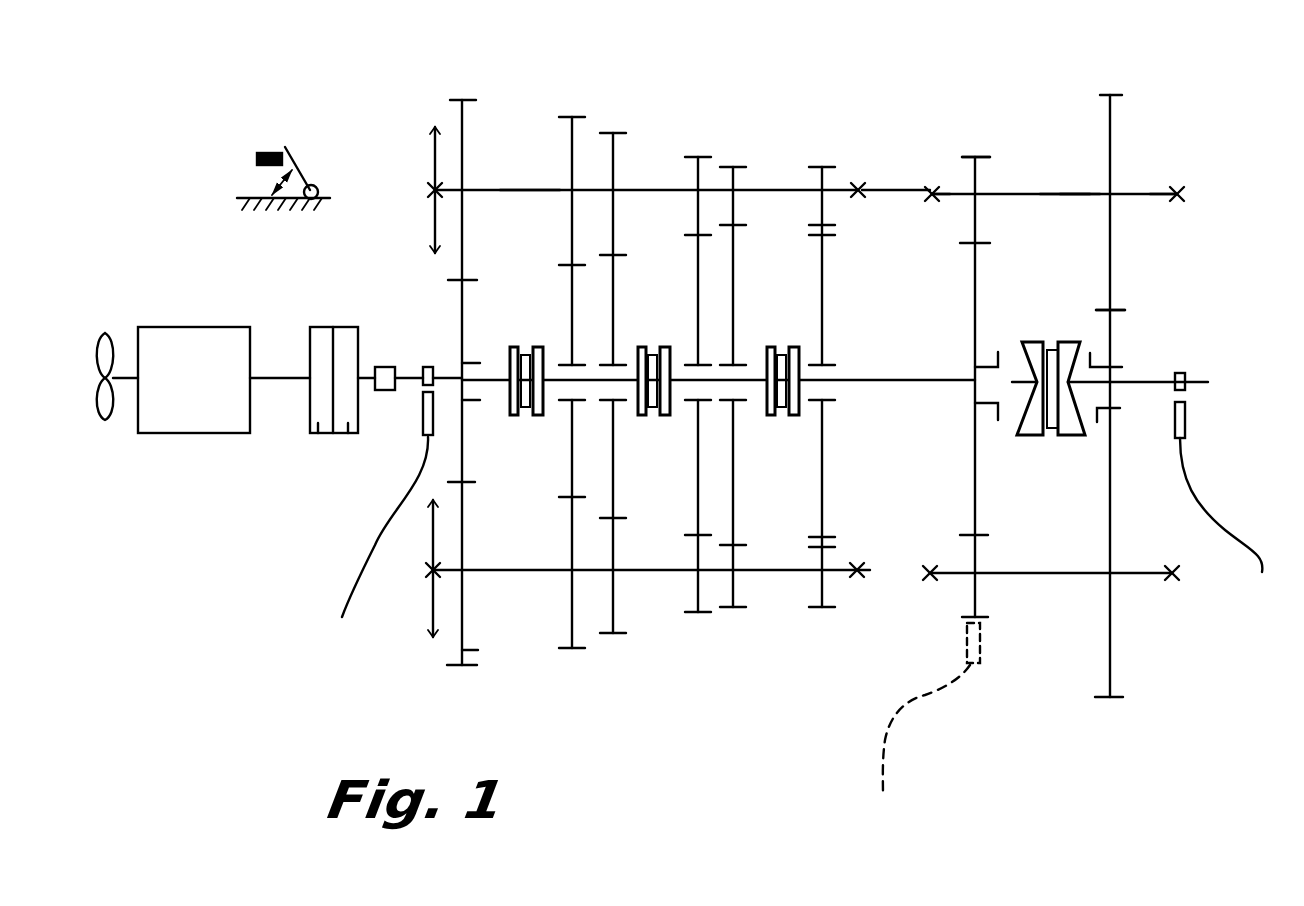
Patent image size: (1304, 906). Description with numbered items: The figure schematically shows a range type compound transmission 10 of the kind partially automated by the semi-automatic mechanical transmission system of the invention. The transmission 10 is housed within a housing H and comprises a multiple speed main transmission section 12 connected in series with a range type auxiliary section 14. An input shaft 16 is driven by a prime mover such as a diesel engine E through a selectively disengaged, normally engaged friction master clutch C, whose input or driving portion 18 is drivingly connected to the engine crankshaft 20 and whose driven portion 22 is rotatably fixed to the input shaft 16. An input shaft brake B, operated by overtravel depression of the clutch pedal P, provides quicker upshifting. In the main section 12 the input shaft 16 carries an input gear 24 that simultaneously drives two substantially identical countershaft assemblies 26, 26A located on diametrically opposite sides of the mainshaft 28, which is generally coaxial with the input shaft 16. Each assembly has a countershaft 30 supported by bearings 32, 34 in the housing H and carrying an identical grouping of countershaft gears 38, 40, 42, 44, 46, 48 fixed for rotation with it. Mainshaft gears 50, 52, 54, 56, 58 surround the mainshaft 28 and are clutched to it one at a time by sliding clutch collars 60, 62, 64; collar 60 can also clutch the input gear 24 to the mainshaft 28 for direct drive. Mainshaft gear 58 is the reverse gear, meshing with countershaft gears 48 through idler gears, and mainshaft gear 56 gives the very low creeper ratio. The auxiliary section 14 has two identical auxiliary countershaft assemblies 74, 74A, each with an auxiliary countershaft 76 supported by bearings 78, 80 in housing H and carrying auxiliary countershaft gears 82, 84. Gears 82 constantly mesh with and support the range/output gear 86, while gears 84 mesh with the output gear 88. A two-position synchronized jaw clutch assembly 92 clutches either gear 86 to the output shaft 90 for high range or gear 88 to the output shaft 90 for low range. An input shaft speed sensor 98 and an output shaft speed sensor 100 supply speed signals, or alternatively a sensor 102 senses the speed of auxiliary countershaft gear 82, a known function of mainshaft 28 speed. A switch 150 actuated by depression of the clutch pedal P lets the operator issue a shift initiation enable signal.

The range type compound transmission 10 is at (886, 183).
The main transmission section 12 is at (654, 160).
The range type auxiliary section 14 is at (1021, 133).
The input shaft 16 is at (408, 368).
The input or driving portion 18 is at (318, 436).
The engine crankshaft 20 is at (270, 375).
The driven portion 22 is at (348, 436).
The input gear 24 is at (465, 308).
The countershaft assembly 26 is at (497, 185).
The countershaft assembly 26A is at (544, 575).
The mainshaft 28 is at (927, 383).
The countershaft 30 is at (542, 193).
The bearing 32 is at (428, 572).
The bearing 34 is at (862, 572).
The countershaft gear 38 is at (465, 650).
The countershaft gear 40 is at (565, 633).
The countershaft gear 42 is at (613, 620).
The countershaft gear 44 is at (692, 607).
The countershaft gear 46 is at (732, 597).
The countershaft gear 48 is at (817, 607).
The mainshaft gear 50 is at (565, 467).
The mainshaft gear 52 is at (612, 482).
The mainshaft gear 54 is at (695, 497).
The mainshaft drive gear 56 is at (732, 492).
The reverse gear 58 is at (818, 497).
The sliding clutch collar 60 is at (505, 403).
The sliding clutch collar 62 is at (673, 353).
The sliding clutch collar 64 is at (767, 355).
The auxiliary countershaft assembly 74 is at (1019, 188).
The auxiliary countershaft assembly 74A is at (1064, 578).
The auxiliary countershaft 76 is at (1073, 198).
The bearing 78 is at (940, 213).
The bearing 80 is at (1180, 207).
The auxiliary section countershaft gear 82 is at (977, 177).
The auxiliary section countershaft gear 84 is at (1110, 137).
The range/output gear 86 is at (975, 295).
The output gear 88 is at (1108, 325).
The output shaft 90 is at (1149, 378).
The two-position synchronized jaw clutch assembly 92 is at (1041, 445).
The input shaft speed sensor 98 is at (420, 420).
The output shaft speed sensor 100 is at (1188, 418).
The sensor 102 is at (967, 645).
The switch 150 is at (262, 155).
The diesel engine E is at (173, 380).
The friction master clutch C is at (333, 322).
The input shaft brake B is at (388, 357).
The housing H is at (430, 152).
The clutch pedal P is at (303, 168).